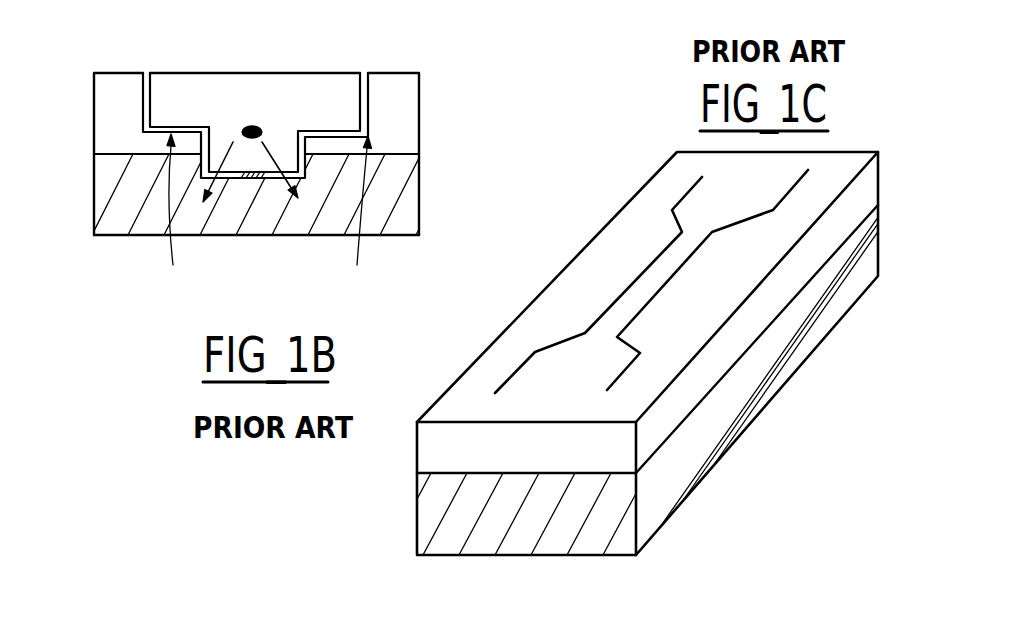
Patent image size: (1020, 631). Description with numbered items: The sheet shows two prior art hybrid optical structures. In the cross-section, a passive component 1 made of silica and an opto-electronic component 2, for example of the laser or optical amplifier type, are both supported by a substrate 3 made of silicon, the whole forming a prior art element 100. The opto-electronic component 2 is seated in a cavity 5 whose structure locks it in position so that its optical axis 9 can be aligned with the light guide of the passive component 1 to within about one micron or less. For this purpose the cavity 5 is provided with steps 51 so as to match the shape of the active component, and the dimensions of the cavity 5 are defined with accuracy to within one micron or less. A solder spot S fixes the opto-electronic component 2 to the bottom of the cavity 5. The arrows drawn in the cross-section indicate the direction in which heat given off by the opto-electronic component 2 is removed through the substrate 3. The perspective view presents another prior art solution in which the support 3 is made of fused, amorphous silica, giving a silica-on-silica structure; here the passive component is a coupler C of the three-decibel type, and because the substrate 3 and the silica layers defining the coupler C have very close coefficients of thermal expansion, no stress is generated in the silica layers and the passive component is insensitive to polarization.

In FIG. 1B, the passive component 1 is at (433, 70).
In FIG. 1B, the opto-electronic component 2 is at (328, 92).
In FIG. 1B, the substrate 3 is at (407, 186).
In FIG. 1C, the substrate 3 is at (732, 421).
In FIG. 1B, the cavity 5 is at (313, 182).
In FIG. 1B, the optical axis 9 is at (254, 126).
In FIG. 1B, the steps 51 is at (266, 218).
In FIG. 1B, the prior art device 100 is at (455, 70).
In FIG. 1B, the solder spot S is at (247, 181).
In FIG. 1C, the coupler C is at (625, 274).